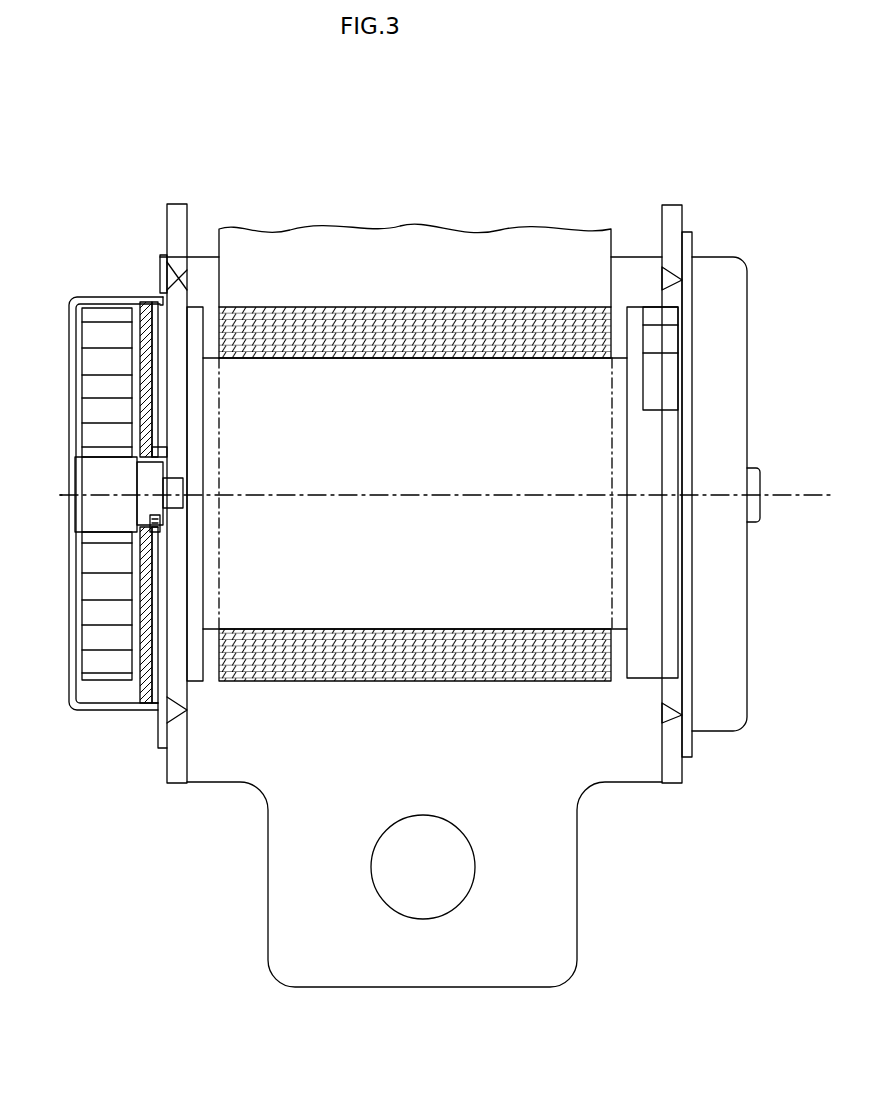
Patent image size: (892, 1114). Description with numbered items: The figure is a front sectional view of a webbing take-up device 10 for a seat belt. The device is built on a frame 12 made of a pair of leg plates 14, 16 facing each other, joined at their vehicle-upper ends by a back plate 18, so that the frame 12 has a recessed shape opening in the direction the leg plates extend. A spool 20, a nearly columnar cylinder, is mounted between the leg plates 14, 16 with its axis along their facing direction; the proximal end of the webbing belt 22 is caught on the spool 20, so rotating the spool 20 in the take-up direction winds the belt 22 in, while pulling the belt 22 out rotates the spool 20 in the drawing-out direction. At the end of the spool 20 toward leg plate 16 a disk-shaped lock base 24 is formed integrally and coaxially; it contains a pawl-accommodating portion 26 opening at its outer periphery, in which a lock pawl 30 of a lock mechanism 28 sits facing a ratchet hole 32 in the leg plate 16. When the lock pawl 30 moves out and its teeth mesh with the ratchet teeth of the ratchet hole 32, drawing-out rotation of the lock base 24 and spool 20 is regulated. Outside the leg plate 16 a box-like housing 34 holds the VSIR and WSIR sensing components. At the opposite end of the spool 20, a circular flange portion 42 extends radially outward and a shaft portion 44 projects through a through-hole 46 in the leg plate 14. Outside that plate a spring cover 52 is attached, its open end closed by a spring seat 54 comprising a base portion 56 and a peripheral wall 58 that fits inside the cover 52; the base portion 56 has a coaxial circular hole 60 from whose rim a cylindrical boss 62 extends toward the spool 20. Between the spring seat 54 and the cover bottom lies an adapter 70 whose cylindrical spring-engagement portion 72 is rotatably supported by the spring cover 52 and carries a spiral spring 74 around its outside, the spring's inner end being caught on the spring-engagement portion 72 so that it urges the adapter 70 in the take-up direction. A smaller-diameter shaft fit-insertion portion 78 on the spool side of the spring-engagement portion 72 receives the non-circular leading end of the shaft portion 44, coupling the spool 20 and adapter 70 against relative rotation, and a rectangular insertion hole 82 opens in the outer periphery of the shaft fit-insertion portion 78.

The webbing take-up device 10 is at (676, 131).
The frame 12 is at (333, 990).
The leg plate 14 is at (189, 783).
The leg plate 16 is at (656, 783).
The back plate 18 is at (433, 975).
The spool 20 is at (483, 612).
The webbing belt 22 is at (408, 245).
The lock base 24 is at (643, 462).
The pawl-accommodating portion 26 is at (665, 408).
The lock mechanism 28 is at (745, 246).
The lock pawl 30 is at (667, 347).
The ratchet hole 32 is at (678, 313).
The housing 34 is at (743, 373).
The flange portion 42 is at (200, 400).
The shaft portion 44 is at (180, 476).
The through-hole 46 is at (178, 312).
The spring cover 52 is at (80, 298).
The spring seat 54 is at (157, 363).
The base portion 56 is at (153, 583).
The peripheral wall 58 is at (171, 668).
The circular hole 60 is at (150, 486).
The boss 62 is at (162, 448).
The adapter 70 is at (83, 503).
The spring-engagement portion 72 is at (97, 520).
The spiral spring 74 is at (95, 355).
The shaft fit-insertion portion 78 is at (147, 492).
The insertion hole 82 is at (160, 533).